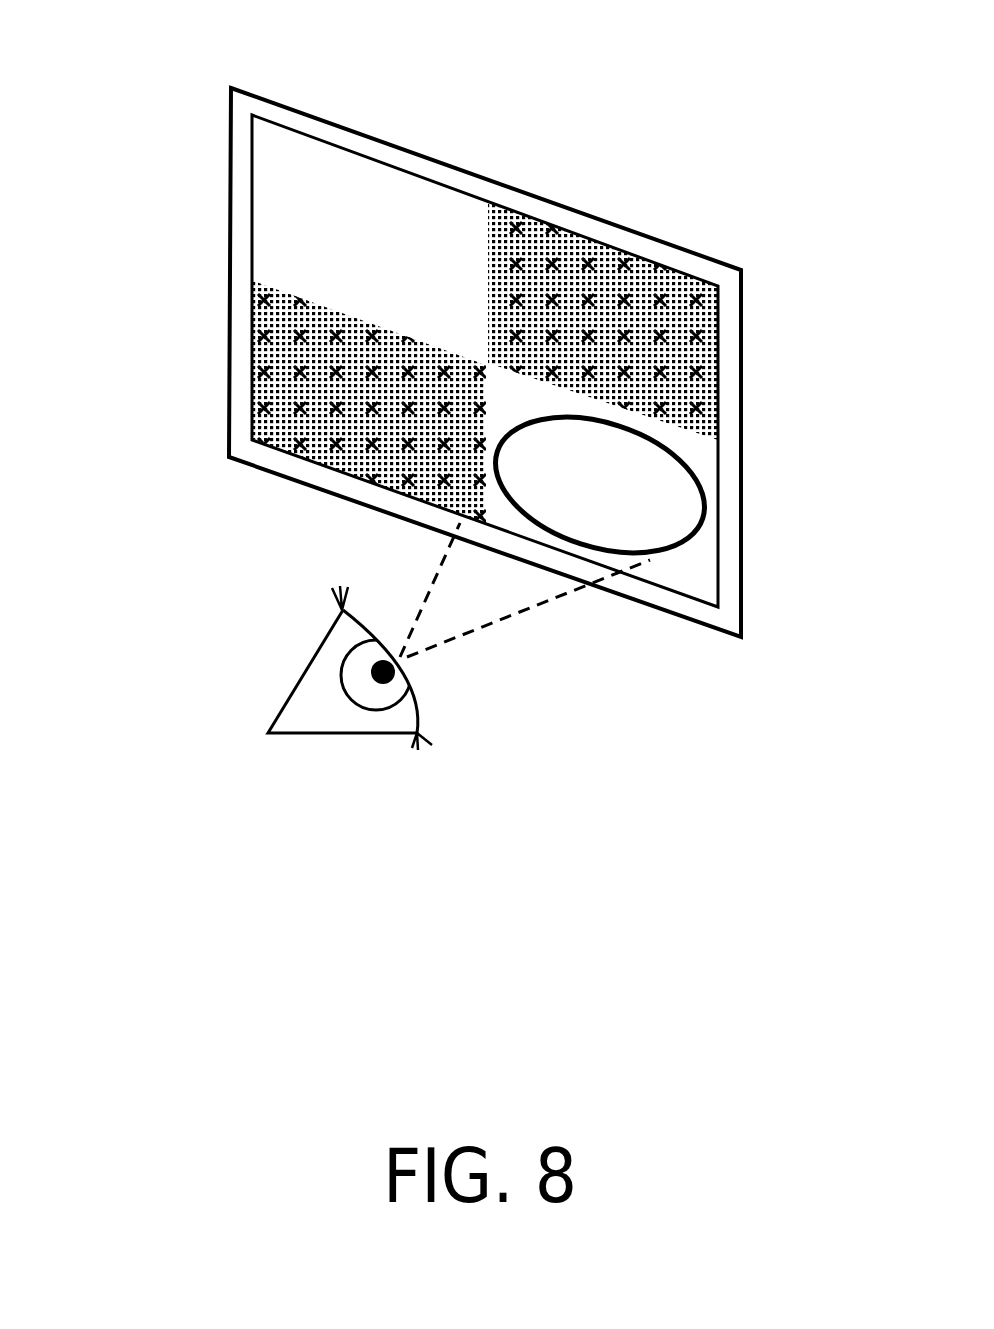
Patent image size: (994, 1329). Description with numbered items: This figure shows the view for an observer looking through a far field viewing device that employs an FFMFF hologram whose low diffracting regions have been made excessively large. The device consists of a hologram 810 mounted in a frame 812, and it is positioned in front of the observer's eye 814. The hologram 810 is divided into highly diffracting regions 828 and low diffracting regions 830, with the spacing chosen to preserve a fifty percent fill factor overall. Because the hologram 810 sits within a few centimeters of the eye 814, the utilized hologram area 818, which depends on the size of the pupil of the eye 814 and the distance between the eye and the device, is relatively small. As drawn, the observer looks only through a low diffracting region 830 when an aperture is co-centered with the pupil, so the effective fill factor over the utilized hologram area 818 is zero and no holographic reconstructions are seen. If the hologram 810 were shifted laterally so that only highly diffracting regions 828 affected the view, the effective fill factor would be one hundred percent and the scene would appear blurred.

The hologram 810 is at (255, 134).
The frame 812 is at (240, 225).
The eye 814 is at (315, 693).
The utilized hologram area 818 is at (693, 472).
The highly diffracting regions 828 is at (535, 267).
The low diffracting region 830 is at (348, 195).